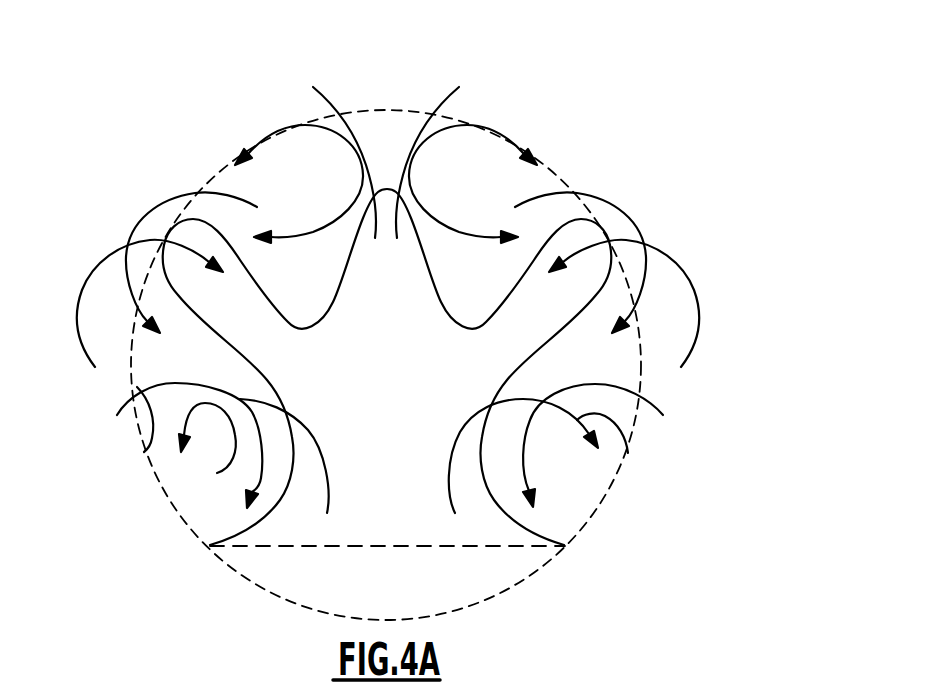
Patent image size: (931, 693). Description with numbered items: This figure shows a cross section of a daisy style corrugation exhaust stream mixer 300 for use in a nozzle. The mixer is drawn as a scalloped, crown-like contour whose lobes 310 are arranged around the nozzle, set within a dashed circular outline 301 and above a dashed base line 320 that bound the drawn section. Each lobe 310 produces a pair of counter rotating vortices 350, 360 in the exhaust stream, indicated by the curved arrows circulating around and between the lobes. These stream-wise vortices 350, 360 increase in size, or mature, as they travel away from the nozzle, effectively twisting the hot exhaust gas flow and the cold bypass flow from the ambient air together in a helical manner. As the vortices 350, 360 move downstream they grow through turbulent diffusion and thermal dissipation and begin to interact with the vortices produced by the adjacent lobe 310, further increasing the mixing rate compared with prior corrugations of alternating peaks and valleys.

The daisy style corrugation exhaust stream mixer 300 is at (754, 136).
The circular boundary region 301 is at (210, 177).
The lobe 310 is at (515, 333).
The base plane line 320 is at (472, 507).
The counter rotating vortex 350 is at (257, 137).
The counter rotating vortex 360 is at (450, 100).